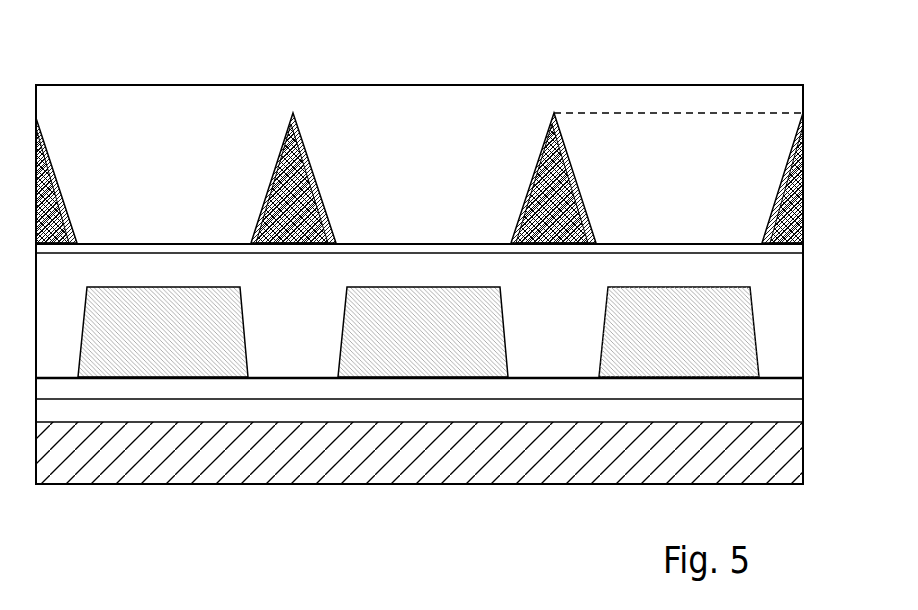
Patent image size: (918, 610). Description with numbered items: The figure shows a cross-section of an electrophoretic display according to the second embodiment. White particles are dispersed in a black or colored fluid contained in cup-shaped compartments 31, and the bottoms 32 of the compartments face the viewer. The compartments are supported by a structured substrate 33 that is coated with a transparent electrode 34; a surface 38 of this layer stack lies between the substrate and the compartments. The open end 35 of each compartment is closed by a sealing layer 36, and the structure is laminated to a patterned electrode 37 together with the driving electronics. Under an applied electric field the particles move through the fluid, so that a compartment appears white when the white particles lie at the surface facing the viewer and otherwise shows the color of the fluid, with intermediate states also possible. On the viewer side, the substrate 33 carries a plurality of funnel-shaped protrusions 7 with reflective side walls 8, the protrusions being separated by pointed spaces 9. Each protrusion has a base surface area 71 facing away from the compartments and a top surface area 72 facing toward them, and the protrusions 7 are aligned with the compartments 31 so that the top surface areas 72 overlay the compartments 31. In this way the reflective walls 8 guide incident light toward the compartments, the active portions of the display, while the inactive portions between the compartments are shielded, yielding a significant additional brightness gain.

The funnel-shaped protrusion 7 is at (760, 148).
The reflective side wall 8 is at (578, 177).
The pointed space 9 is at (545, 215).
The cup-shaped compartment 31 is at (722, 330).
The bottom of compartment 32 is at (737, 298).
The substrate 33 is at (806, 169).
The transparent electrode 34 is at (806, 245).
The open end 35 is at (765, 379).
The sealing layer 36 is at (804, 387).
The patterned electrode 37 is at (804, 408).
The surface of planarization layer 38 is at (404, 243).
The base surface area 71 is at (678, 113).
The top surface area 72 is at (678, 243).